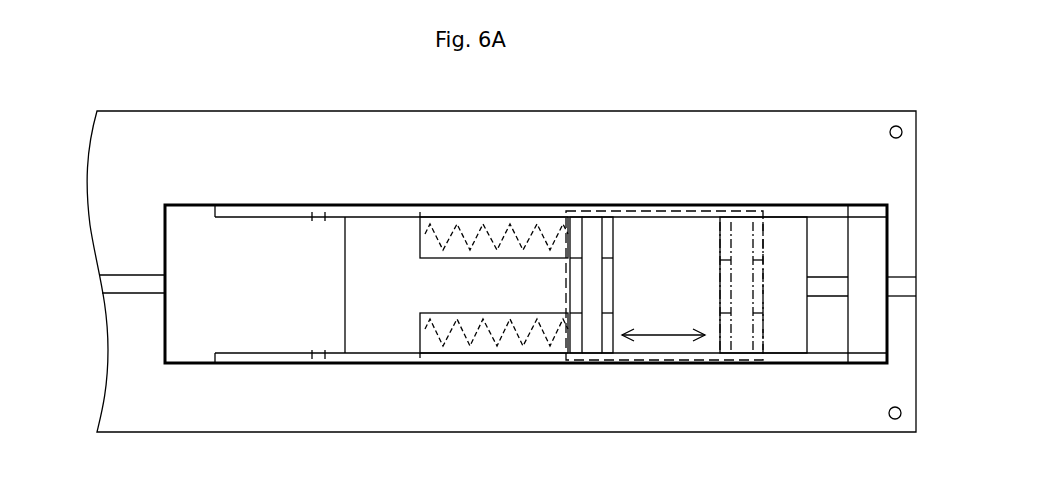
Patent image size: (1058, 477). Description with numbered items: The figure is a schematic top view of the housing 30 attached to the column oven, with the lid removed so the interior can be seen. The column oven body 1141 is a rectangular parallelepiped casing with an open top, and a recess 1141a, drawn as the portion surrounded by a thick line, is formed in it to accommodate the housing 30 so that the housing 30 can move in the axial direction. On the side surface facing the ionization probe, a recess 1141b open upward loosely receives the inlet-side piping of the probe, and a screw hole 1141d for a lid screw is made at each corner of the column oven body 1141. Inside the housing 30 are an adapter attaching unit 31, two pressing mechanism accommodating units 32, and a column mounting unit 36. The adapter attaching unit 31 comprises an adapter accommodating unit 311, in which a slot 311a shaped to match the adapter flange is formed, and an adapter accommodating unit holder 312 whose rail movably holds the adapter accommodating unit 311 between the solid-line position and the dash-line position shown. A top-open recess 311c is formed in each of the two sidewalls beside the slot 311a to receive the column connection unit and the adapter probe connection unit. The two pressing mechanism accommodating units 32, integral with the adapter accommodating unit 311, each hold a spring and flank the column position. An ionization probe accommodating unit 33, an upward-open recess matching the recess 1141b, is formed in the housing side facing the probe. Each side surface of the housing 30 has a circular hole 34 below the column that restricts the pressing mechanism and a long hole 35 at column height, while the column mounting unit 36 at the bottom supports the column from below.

The column oven body 1141 is at (582, 110).
The recess 1141a is at (869, 252).
The recess 1141b is at (903, 287).
The screw hole 1141d is at (891, 126).
The housing 30 is at (745, 205).
The adapter attaching unit 31 is at (637, 236).
The adapter accommodating unit 311 is at (592, 212).
The slot 311a is at (597, 332).
The recess 311c is at (578, 282).
The adapter accommodating unit holder 312 is at (633, 210).
The pressing mechanism accommodating unit 32 is at (421, 237).
The ionization probe accommodating unit 33 is at (815, 287).
The circular hole 34 is at (322, 365).
The long hole 35 is at (495, 363).
The column mounting unit 36 is at (345, 308).